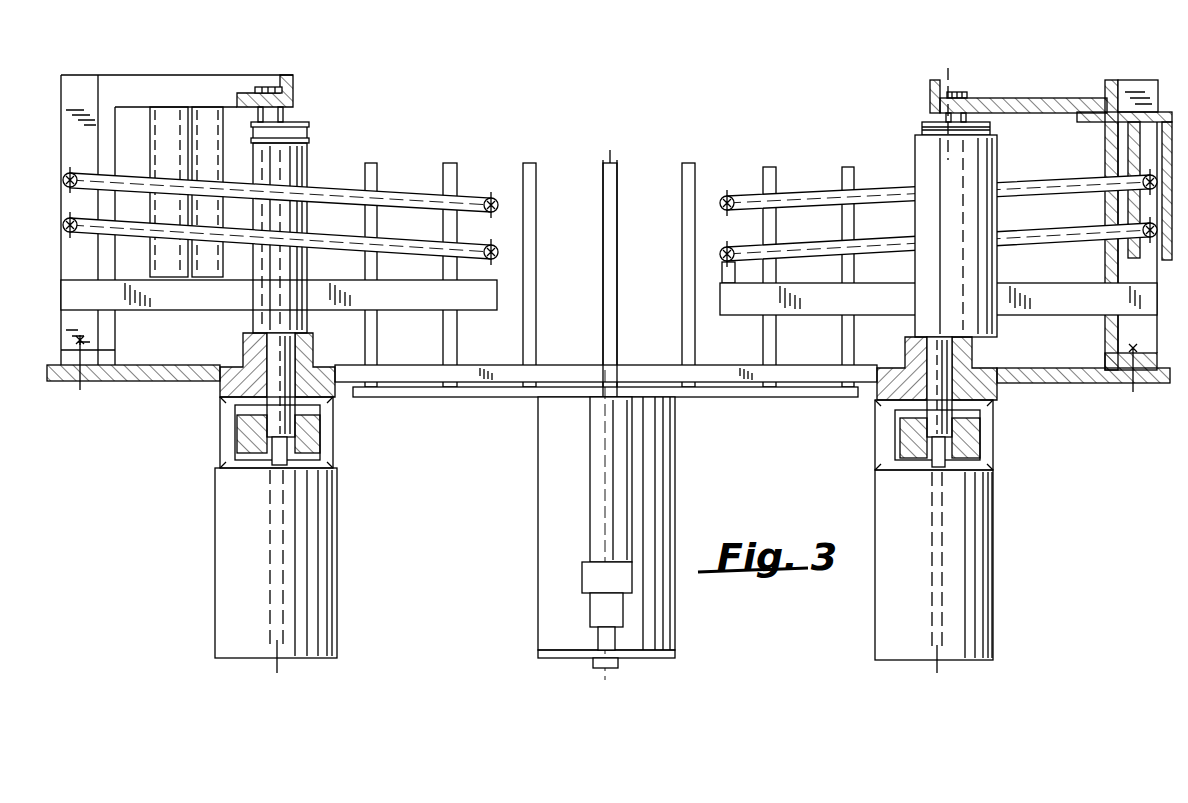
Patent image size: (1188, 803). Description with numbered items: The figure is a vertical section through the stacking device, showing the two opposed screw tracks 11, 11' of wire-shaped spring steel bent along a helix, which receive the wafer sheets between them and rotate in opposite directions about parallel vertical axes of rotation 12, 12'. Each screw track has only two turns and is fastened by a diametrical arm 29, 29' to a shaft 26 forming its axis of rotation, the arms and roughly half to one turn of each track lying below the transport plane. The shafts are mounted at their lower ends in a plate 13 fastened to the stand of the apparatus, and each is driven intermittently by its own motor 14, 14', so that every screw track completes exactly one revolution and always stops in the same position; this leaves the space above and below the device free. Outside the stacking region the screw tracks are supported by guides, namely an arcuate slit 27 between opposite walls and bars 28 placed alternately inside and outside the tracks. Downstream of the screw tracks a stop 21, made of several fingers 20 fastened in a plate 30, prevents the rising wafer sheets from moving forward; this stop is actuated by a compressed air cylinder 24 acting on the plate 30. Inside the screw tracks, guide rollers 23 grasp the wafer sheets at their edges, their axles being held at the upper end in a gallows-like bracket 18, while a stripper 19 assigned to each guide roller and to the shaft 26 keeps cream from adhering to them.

The screw track 11 is at (280, 191).
The screw track 11' is at (938, 218).
The axis of rotation 12 is at (260, 385).
The axis of rotation 12' is at (920, 370).
The plate 13 is at (580, 370).
The motor 14 is at (297, 535).
The motor 14' is at (964, 536).
The gallows-like bracket 18 is at (145, 98).
The stripper 19 is at (279, 107).
The fingers 20 is at (528, 232).
The stop 21 is at (525, 403).
The guide rollers 23 is at (975, 153).
The compressed air cylinder 24 is at (605, 438).
The shaft 26 is at (303, 163).
The arcuate slit 27 is at (1105, 283).
The bars 28 is at (205, 200).
The diametrical arm 29 is at (279, 238).
The diametrical arm 29' is at (938, 242).
The plate 30 is at (700, 390).